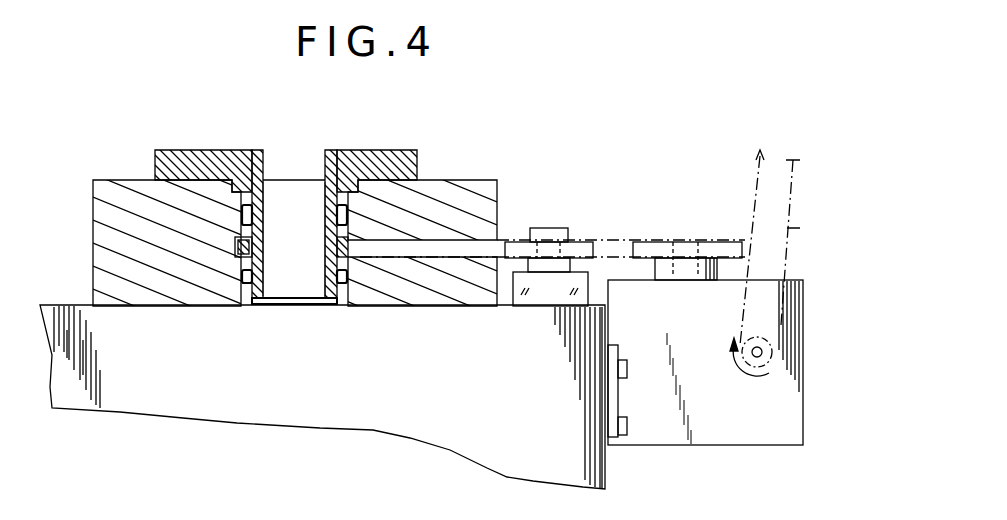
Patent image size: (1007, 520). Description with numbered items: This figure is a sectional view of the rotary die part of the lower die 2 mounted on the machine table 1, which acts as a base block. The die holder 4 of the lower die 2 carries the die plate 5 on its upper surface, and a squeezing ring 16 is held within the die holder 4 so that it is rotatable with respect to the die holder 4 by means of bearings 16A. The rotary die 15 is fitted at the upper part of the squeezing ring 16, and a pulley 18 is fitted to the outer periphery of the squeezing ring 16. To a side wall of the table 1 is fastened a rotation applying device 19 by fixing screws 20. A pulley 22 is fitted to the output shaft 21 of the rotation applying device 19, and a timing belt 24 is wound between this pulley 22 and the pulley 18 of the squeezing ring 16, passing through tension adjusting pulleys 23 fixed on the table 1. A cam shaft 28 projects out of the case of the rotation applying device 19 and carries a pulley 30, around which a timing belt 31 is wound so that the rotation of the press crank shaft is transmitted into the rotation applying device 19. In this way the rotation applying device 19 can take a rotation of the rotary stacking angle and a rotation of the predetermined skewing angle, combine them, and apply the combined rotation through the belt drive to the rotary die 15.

The machine table 1 is at (120, 398).
The lower die 2 is at (84, 241).
The die holder 4 is at (108, 197).
The die plate 5 is at (152, 163).
The die 15 is at (333, 153).
The squeezing ring 16 is at (257, 267).
The bearings 16A is at (345, 220).
The pulley 18 is at (357, 263).
The rotation applying device 19 is at (806, 314).
The fixing screws 20 is at (630, 430).
The output shaft 21 is at (687, 267).
The pulley 22 is at (652, 253).
The tension adjusting pulleys 23 is at (522, 240).
The timing belt 24 is at (613, 247).
The cam shaft 28 is at (762, 350).
The pulley 30 is at (770, 360).
The timing belt 31 is at (800, 228).